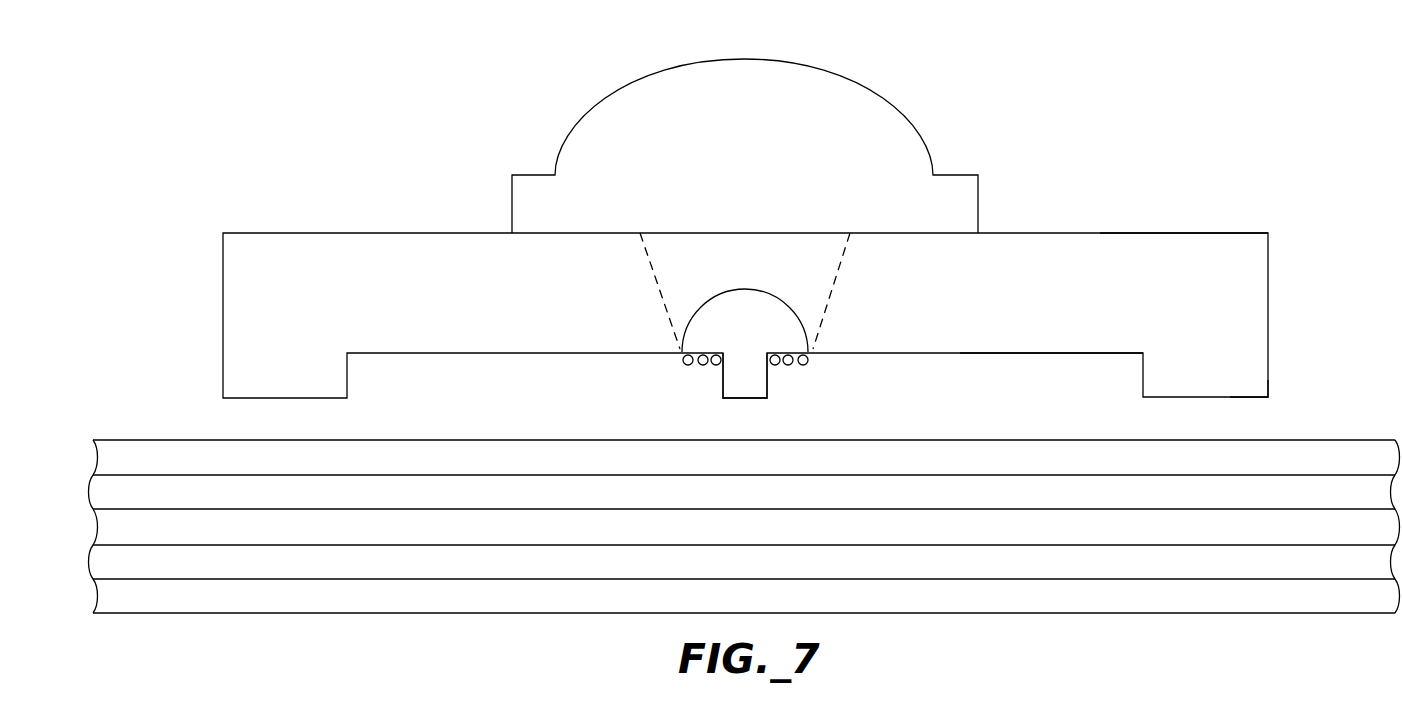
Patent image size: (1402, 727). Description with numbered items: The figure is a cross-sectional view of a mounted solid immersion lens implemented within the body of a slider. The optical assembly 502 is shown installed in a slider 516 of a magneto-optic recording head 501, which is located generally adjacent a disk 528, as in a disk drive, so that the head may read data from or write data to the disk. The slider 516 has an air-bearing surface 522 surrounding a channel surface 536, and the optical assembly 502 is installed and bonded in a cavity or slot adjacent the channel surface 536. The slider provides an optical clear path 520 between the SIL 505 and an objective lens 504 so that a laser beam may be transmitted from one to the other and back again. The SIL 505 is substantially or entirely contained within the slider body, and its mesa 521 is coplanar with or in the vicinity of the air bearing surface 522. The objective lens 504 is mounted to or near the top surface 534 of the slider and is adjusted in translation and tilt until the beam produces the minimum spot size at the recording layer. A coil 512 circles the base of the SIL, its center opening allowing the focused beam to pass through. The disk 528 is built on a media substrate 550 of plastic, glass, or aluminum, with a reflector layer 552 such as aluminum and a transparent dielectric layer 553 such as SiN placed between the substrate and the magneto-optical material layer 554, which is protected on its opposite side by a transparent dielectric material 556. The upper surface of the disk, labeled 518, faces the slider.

The magneto-optic recording head 501 is at (203, 402).
The objective lens 504 is at (774, 161).
The slider 516 is at (411, 294).
The optical clear path 520 is at (768, 264).
The top surface 534 is at (1168, 232).
The channel surface 536 is at (1020, 353).
The air-bearing surface 522 is at (1246, 397).
The optical assembly 502 is at (648, 290).
The solid immersion lens (SIL) 505 is at (768, 331).
The coil 512 is at (789, 364).
The mesa 521 is at (743, 372).
The substrate top surface 518 is at (1192, 440).
The disk 528 is at (1306, 441).
The transparent dielectric material 556 is at (408, 469).
The magneto-optical material layer 554 is at (369, 502).
The transparent dielectric layer 553 is at (331, 538).
The reflector layer 552 is at (291, 573).
The media substrate 550 is at (253, 607).